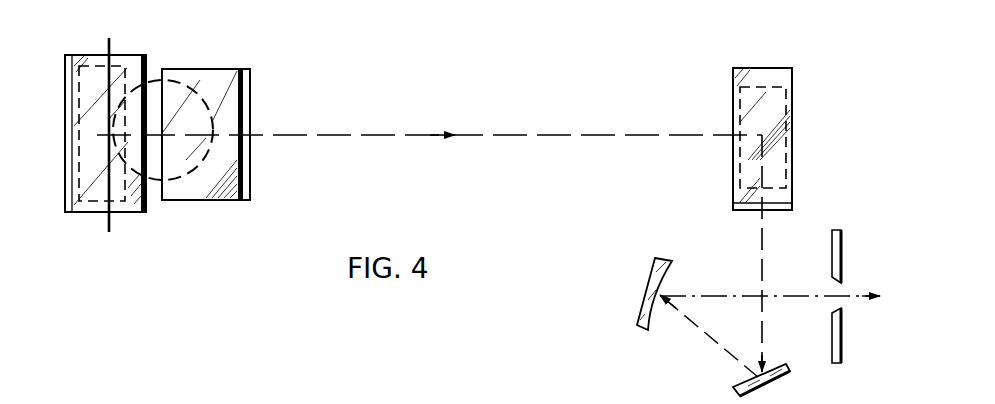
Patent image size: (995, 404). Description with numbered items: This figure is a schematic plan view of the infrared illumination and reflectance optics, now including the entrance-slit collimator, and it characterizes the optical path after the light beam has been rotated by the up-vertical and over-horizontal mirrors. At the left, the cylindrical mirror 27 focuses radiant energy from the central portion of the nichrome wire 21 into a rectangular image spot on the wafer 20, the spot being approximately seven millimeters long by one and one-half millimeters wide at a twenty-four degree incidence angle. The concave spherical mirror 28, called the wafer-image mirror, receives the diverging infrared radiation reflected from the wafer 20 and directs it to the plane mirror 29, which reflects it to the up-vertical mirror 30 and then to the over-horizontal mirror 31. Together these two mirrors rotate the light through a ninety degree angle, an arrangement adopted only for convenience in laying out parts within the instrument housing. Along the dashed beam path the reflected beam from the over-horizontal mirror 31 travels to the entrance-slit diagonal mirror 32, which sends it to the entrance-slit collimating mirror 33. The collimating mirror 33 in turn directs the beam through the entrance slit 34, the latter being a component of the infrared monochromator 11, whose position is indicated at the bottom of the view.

The infrared monochromator 11 is at (362, 403).
The wafer 20 is at (190, 86).
The nichrome wire 21 is at (111, 44).
The cylindrical mirror 27 is at (64, 167).
The concave spherical mirror 28 is at (227, 68).
The plane mirror 29 is at (80, 203).
The up-vertical mirror 30 is at (740, 98).
The over-horizontal mirror 31 is at (793, 95).
The entrance-slit diagonal mirror 32 is at (785, 377).
The entrance-slit collimating mirror 33 is at (655, 258).
The entrance slit 34 is at (844, 266).